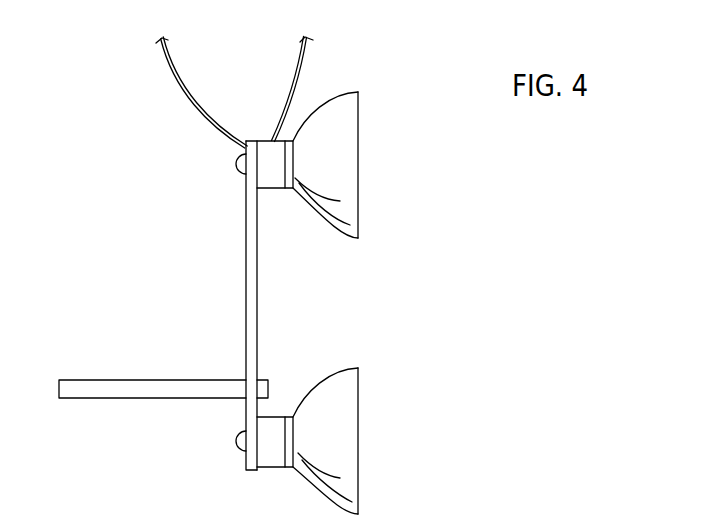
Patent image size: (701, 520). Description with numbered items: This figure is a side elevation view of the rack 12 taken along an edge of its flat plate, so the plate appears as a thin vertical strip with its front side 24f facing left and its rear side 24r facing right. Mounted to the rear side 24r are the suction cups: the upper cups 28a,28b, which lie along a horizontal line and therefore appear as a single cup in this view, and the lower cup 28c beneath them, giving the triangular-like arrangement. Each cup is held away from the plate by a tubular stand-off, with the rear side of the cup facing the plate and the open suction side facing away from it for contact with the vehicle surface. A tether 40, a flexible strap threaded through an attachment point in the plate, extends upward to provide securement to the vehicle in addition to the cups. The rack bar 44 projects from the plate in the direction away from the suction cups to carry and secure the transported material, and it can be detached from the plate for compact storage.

The rack 12 is at (458, 227).
The front side of plate 24f is at (246, 257).
The rear side of plate 24r is at (257, 295).
The tether 40 is at (302, 60).
The suction cups 28a,28b is at (337, 119).
The suction cup 28c is at (337, 395).
The rack bar 44 is at (149, 388).